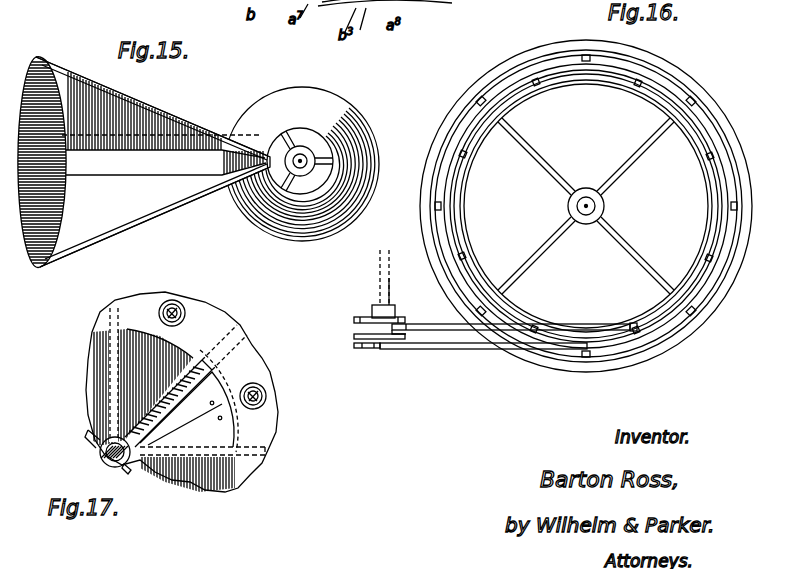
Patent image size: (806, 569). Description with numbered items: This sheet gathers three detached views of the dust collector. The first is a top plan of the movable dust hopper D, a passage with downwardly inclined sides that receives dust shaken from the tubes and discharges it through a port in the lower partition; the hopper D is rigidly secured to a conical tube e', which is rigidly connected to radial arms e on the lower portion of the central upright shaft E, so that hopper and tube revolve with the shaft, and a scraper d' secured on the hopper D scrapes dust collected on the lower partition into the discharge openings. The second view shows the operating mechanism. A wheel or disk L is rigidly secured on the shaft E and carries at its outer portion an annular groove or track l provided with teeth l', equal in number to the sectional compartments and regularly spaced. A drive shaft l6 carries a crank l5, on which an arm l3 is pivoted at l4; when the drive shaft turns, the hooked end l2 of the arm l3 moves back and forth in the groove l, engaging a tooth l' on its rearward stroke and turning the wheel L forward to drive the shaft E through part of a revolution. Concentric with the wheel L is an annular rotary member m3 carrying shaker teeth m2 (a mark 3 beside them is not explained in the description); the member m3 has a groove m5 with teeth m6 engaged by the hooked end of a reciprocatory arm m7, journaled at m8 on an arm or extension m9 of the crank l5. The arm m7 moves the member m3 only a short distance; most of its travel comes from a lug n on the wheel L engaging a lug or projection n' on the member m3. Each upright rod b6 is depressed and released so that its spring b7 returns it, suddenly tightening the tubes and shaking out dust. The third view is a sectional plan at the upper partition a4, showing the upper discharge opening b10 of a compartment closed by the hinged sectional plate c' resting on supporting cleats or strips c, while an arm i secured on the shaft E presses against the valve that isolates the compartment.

In FIG. 15, the scraper d' is at (75, 162).
In FIG. 15, the dust hopper D is at (172, 92).
In FIG. 15, the conical tube e' is at (302, 164).
In FIG. 15, the radial arms e is at (300, 152).
In FIG. 16, the wheel or disk L is at (468, 189).
In FIG. 16, the annular rotary member m3 is at (450, 147).
In FIG. 16, the groove m5 is at (546, 62).
In FIG. 16, the teeth m6 is at (694, 100).
In FIG. 16, the annular groove or track l is at (586, 206).
In FIG. 16, the teeth l' is at (572, 193).
In FIG. 16, the pin 3 is at (408, 226).
In FIG. 16, the shaker teeth m2 is at (442, 248).
In FIG. 16, the lug or projection n' is at (510, 249).
In FIG. 16, the lug n is at (515, 292).
In FIG. 16, the drive shaft l6 is at (391, 290).
In FIG. 16, the crank l5 is at (366, 310).
In FIG. 16, the arm or extension of the crank m9 is at (354, 321).
In FIG. 16, the pivot l4 is at (406, 326).
In FIG. 16, the hooked end portion l2 is at (631, 322).
In FIG. 16, the arm l3 is at (566, 324).
In FIG. 16, the journal m8 is at (362, 350).
In FIG. 16, the reciprocatory arm m7 is at (488, 350).
In FIG. 17, the upper horizontal partition a4 is at (222, 318).
In FIG. 17, the upper discharge opening b10 is at (102, 372).
In FIG. 17, the supporting cleats or strips c is at (186, 386).
In FIG. 17, the closing device or plate c' is at (189, 401).
In FIG. 17, the upright rod b6 is at (172, 300).
In FIG. 17, the spring b7 is at (160, 312).
In FIG. 17, the central upright shaft E is at (100, 453).
In FIG. 17, the arm i is at (92, 432).